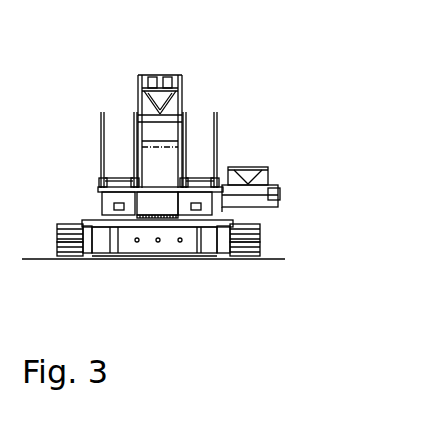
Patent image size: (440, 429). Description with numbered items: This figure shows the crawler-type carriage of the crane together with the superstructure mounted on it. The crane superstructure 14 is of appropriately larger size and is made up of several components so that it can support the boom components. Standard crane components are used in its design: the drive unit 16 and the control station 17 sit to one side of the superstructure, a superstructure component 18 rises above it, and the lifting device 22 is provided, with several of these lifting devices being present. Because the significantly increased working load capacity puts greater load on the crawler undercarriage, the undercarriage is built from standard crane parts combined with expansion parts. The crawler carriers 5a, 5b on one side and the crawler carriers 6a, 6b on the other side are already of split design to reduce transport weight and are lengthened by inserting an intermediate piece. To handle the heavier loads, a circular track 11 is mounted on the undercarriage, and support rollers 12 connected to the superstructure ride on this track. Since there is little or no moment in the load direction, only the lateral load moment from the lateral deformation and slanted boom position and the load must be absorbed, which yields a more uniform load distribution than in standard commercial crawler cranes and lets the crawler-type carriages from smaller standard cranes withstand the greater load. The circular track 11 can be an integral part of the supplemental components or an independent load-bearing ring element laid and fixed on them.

The crawler carrier 5a is at (68, 260).
The crawler carrier 5b is at (67, 292).
The crawler carrier 6a is at (240, 260).
The crawler carrier 6b is at (242, 292).
The circular track 11 is at (100, 218).
The support rollers 12 is at (100, 212).
The crane superstructure 14 is at (100, 186).
The drive unit 16 is at (246, 166).
The control station 17 is at (275, 174).
The superstructure component 18 is at (160, 77).
The lifting device 22 is at (125, 176).